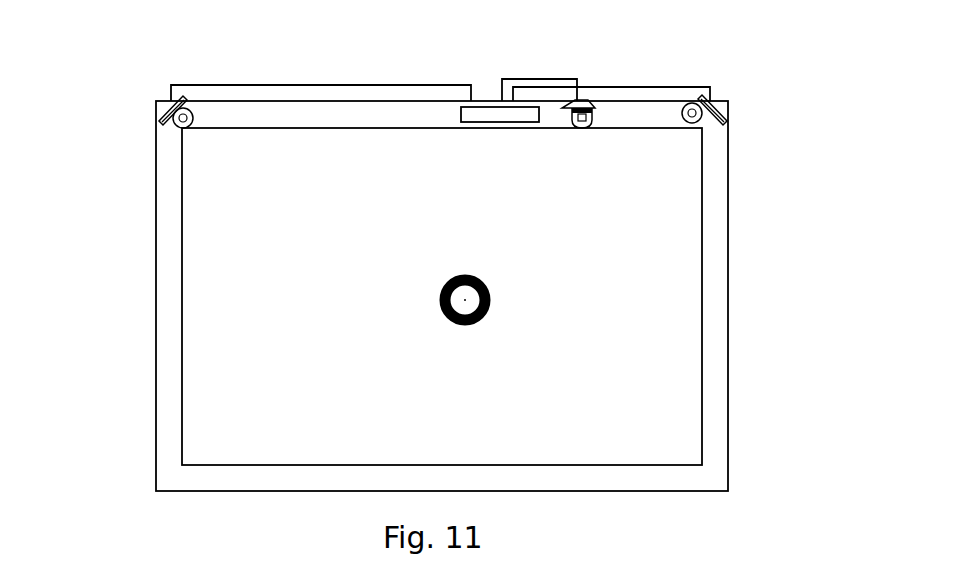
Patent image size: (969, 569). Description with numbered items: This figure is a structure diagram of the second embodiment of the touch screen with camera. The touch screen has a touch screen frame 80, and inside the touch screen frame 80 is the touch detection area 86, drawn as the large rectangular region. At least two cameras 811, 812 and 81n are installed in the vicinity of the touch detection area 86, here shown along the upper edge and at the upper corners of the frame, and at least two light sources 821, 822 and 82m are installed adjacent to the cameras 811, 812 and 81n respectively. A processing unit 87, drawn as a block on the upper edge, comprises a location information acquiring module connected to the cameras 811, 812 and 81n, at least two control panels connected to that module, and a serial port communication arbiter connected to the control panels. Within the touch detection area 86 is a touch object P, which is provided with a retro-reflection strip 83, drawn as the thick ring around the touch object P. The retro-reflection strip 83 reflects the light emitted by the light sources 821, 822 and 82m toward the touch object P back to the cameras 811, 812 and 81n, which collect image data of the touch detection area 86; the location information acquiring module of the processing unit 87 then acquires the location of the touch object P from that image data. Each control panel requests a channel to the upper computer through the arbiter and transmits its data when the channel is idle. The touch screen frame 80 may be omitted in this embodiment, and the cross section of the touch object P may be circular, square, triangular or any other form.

The touch screen frame 80 is at (728, 189).
The touch detection area 86 is at (640, 292).
The processing unit 87 is at (480, 122).
The retro-reflection strip 83 is at (467, 326).
The touch object P is at (465, 300).
The camera 812 is at (583, 101).
The light source 822 is at (597, 115).
The camera 811 is at (713, 115).
The light source 821 is at (704, 118).
The camera 81n is at (163, 113).
The light source 82m is at (180, 118).